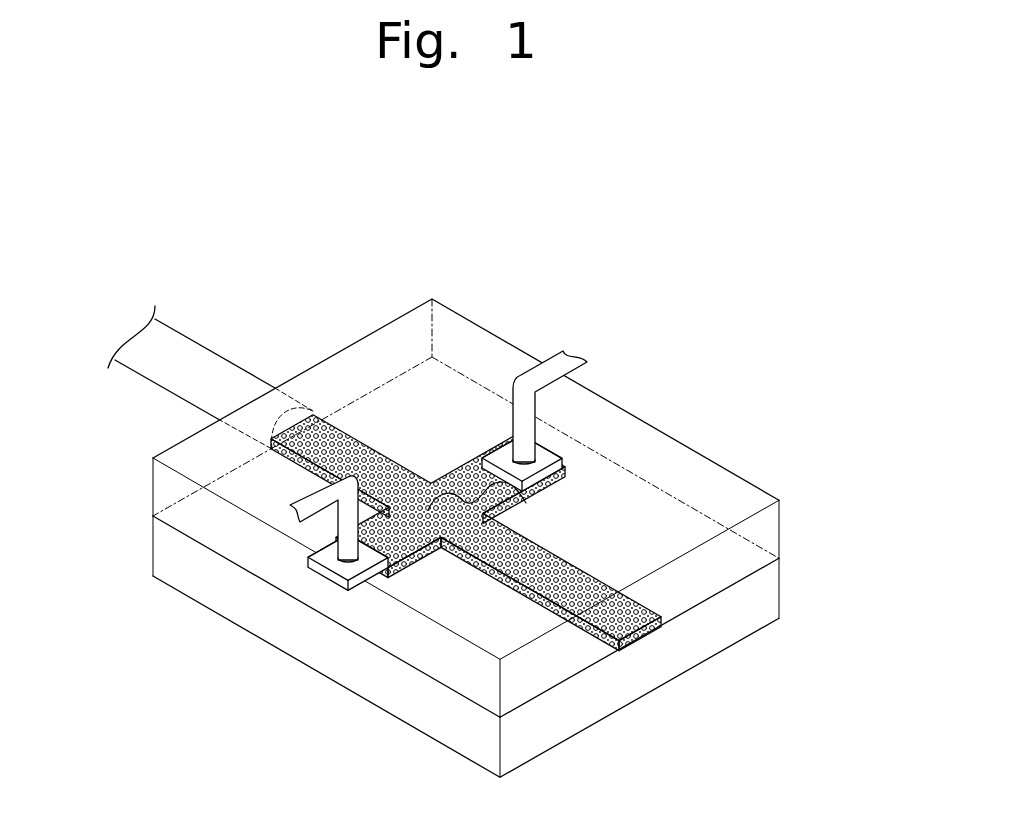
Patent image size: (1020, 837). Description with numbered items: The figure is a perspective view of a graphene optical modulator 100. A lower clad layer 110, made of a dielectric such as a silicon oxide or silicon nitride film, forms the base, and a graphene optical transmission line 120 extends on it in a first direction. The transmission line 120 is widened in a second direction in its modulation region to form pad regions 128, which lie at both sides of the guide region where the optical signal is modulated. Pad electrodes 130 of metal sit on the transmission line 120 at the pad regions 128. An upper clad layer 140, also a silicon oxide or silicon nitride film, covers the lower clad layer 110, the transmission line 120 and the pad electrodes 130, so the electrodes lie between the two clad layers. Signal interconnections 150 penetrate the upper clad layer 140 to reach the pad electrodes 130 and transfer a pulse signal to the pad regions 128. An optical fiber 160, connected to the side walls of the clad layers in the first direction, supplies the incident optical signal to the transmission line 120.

The graphene optical modulator 100 is at (730, 196).
The lower clad layer 110 is at (160, 556).
The graphene optical transmission line 120 is at (481, 517).
The pad regions 128 is at (515, 493).
The pad electrodes 130 is at (500, 455).
The upper clad layer 140 is at (160, 488).
The signal interconnections 150 is at (553, 352).
The optical fiber 160 is at (208, 362).